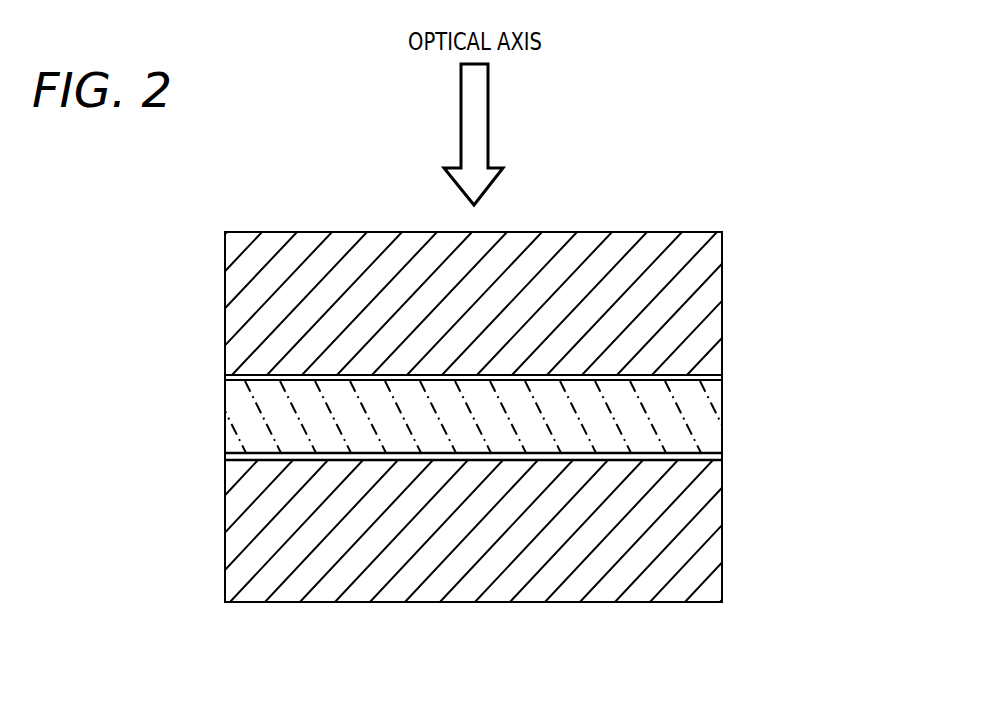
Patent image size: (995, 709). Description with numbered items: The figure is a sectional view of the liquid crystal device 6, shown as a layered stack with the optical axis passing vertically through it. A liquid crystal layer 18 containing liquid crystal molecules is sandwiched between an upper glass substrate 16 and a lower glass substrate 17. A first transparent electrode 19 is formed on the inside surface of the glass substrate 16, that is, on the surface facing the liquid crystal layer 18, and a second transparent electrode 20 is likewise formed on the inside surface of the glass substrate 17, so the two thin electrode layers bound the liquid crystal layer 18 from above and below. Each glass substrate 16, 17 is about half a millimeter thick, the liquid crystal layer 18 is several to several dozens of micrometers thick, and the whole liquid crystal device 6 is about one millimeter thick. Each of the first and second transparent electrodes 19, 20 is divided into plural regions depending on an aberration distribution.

The liquid crystal device 6 is at (286, 165).
The glass substrate 16 is at (258, 232).
The glass substrate 17 is at (258, 602).
The liquid crystal layer 18 is at (225, 412).
The first transparent electrode 19 is at (722, 367).
The second transparent electrode 20 is at (722, 458).